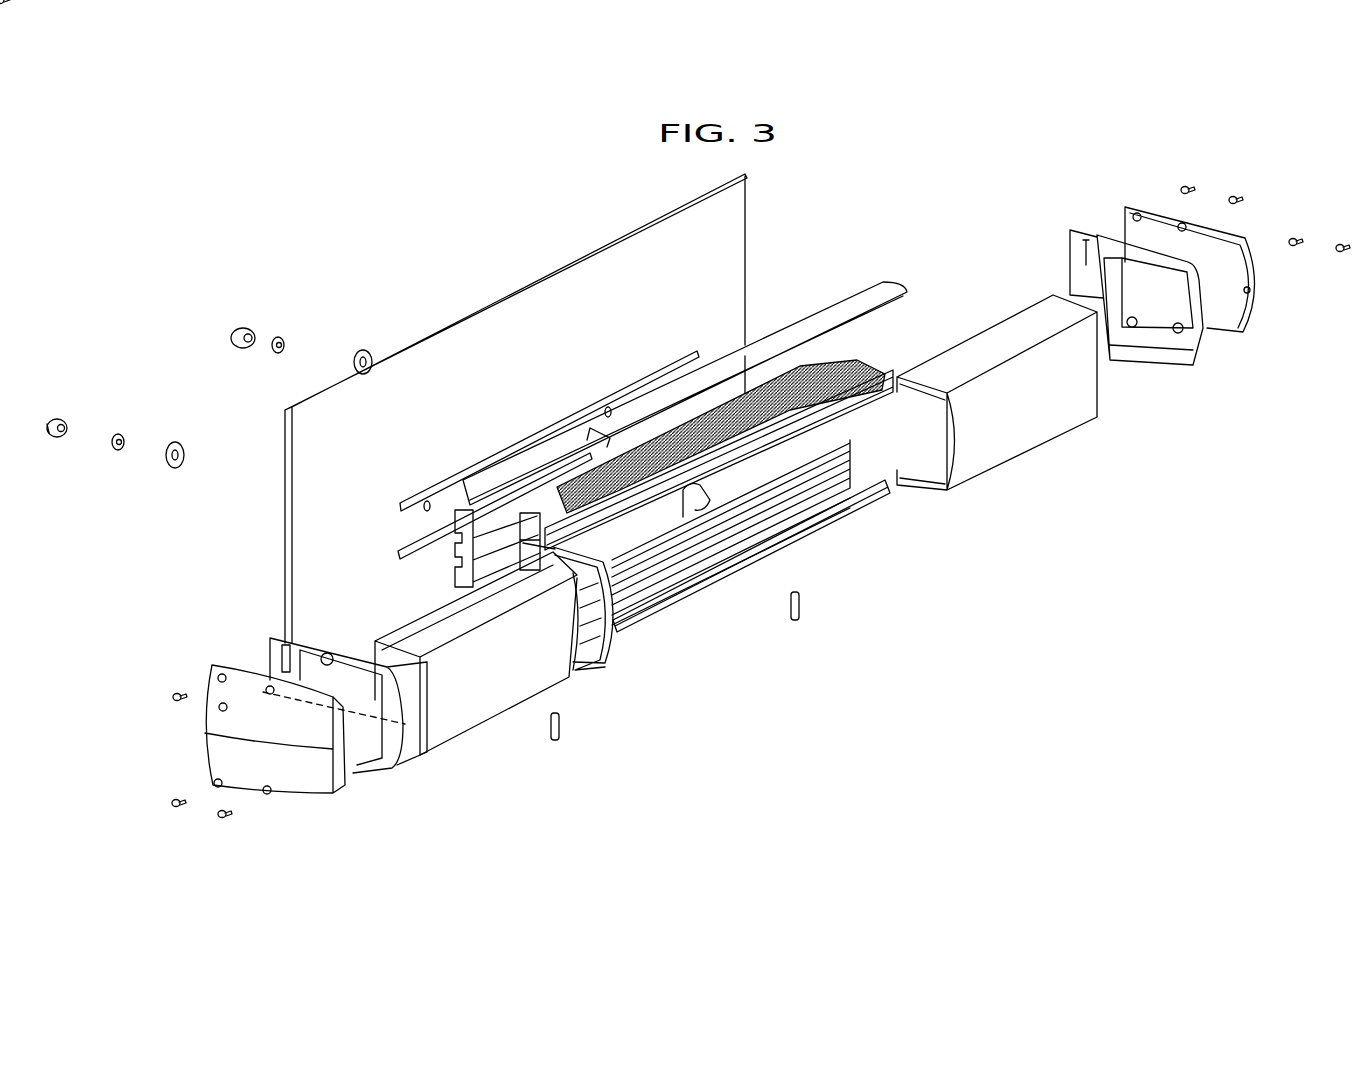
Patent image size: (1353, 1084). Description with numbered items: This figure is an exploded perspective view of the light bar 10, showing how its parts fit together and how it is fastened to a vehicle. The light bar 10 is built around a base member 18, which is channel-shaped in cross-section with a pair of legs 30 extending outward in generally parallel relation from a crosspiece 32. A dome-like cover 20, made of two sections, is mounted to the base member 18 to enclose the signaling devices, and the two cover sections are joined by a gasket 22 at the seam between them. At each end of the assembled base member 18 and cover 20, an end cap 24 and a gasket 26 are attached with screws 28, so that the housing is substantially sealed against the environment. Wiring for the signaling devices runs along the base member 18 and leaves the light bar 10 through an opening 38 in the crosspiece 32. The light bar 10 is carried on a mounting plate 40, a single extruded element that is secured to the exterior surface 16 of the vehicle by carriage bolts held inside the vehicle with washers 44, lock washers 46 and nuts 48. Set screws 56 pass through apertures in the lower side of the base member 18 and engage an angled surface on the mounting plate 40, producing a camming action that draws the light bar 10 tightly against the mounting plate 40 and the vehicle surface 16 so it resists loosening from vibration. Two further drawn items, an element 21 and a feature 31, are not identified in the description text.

The light bar 10 is at (777, 519).
The exterior surface 16 is at (612, 293).
The base member 18 is at (801, 367).
The cover 20 is at (444, 730).
The end cap 21 is at (1245, 335).
The gasket 22 is at (603, 667).
The end cap 24 is at (298, 788).
The gasket 26 is at (378, 777).
The screws 28 is at (1233, 195).
The legs 30 is at (897, 432).
The slot 31 is at (917, 433).
The crosspiece 32 is at (673, 598).
The opening 38 is at (740, 558).
The mounting plate 40 is at (472, 505).
The washers 44 is at (170, 470).
The lock washers 46 is at (115, 455).
The nuts 48 is at (52, 440).
The set screws 56 is at (552, 743).